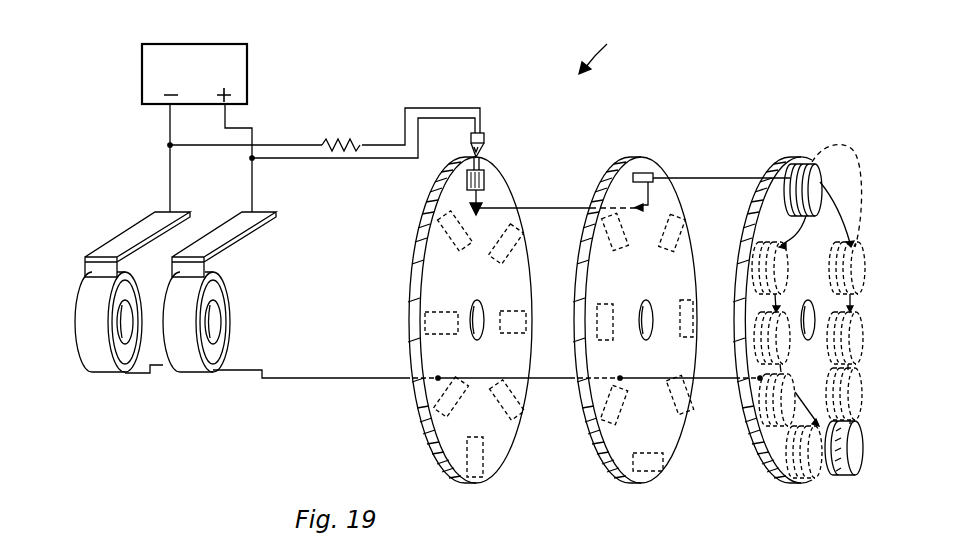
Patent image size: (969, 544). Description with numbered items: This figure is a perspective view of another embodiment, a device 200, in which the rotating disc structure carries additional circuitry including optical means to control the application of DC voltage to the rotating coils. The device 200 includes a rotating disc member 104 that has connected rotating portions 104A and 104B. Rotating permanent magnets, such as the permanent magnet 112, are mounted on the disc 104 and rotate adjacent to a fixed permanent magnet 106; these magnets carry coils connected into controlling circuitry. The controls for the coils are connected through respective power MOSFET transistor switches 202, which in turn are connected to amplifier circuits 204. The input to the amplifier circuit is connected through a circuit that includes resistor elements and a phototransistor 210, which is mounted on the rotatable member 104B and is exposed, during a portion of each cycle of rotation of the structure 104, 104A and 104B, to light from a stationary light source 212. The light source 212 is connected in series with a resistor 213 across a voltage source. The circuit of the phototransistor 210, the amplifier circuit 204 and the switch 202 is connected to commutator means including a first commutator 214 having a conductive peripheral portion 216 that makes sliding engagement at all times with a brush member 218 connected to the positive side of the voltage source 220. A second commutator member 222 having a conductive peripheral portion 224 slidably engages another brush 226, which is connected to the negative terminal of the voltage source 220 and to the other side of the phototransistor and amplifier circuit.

The rotating disc member 104 is at (777, 455).
The rotating portion 104A is at (672, 448).
The rotatable member 104B is at (503, 447).
The fixed permanent magnet 106 is at (857, 462).
The rotating permanent magnet 112 is at (810, 164).
The device 200 is at (613, 52).
The power MOSFET transistor switch 202 is at (640, 172).
The amplifier circuit 204 is at (480, 208).
The phototransistor 210 is at (485, 178).
The stationary light source 212 is at (484, 136).
The resistor 213 is at (337, 141).
The first commutator 214 is at (200, 378).
The conductive peripheral portion 216 is at (219, 278).
The brush member 218 is at (208, 261).
The voltage source 220 is at (247, 57).
The commutator member 222 is at (92, 377).
The conductive peripheral portion 224 is at (128, 376).
The brush 226 is at (92, 272).